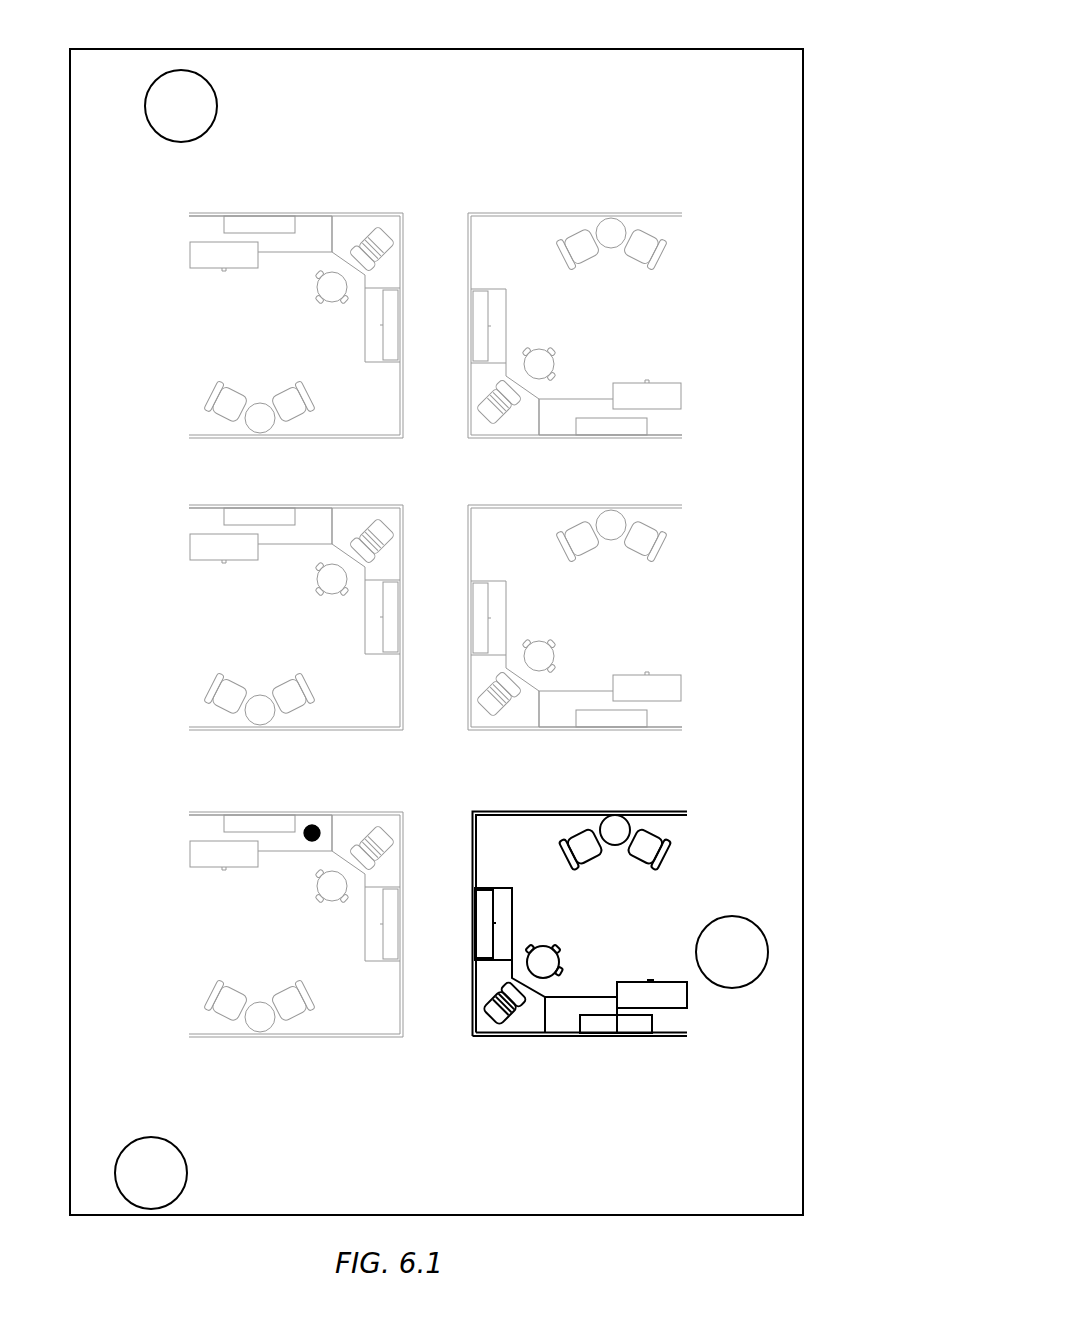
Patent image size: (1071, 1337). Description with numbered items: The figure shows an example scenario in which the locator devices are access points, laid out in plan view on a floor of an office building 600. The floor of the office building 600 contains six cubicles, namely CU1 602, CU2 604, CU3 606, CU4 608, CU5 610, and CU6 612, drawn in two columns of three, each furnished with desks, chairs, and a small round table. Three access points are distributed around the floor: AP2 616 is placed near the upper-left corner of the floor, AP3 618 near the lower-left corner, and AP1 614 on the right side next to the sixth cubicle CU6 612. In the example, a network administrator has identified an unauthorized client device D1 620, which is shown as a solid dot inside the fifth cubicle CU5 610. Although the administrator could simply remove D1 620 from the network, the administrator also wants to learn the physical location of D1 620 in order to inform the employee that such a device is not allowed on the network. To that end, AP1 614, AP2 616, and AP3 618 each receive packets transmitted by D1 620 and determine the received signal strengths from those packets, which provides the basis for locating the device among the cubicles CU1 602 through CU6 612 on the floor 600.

The floor of office building 600 is at (552, 49).
The cubicle CU1 602 is at (258, 213).
The cubicle CU2 604 is at (540, 213).
The cubicle CU3 606 is at (258, 505).
The cubicle CU4 608 is at (540, 505).
The cubicle CU5 610 is at (258, 812).
The cubicle CU6 612 is at (545, 812).
The access point AP1 614 is at (718, 917).
The access point AP2 616 is at (212, 86).
The access point AP3 618 is at (170, 1139).
The client device D1 620 is at (303, 842).